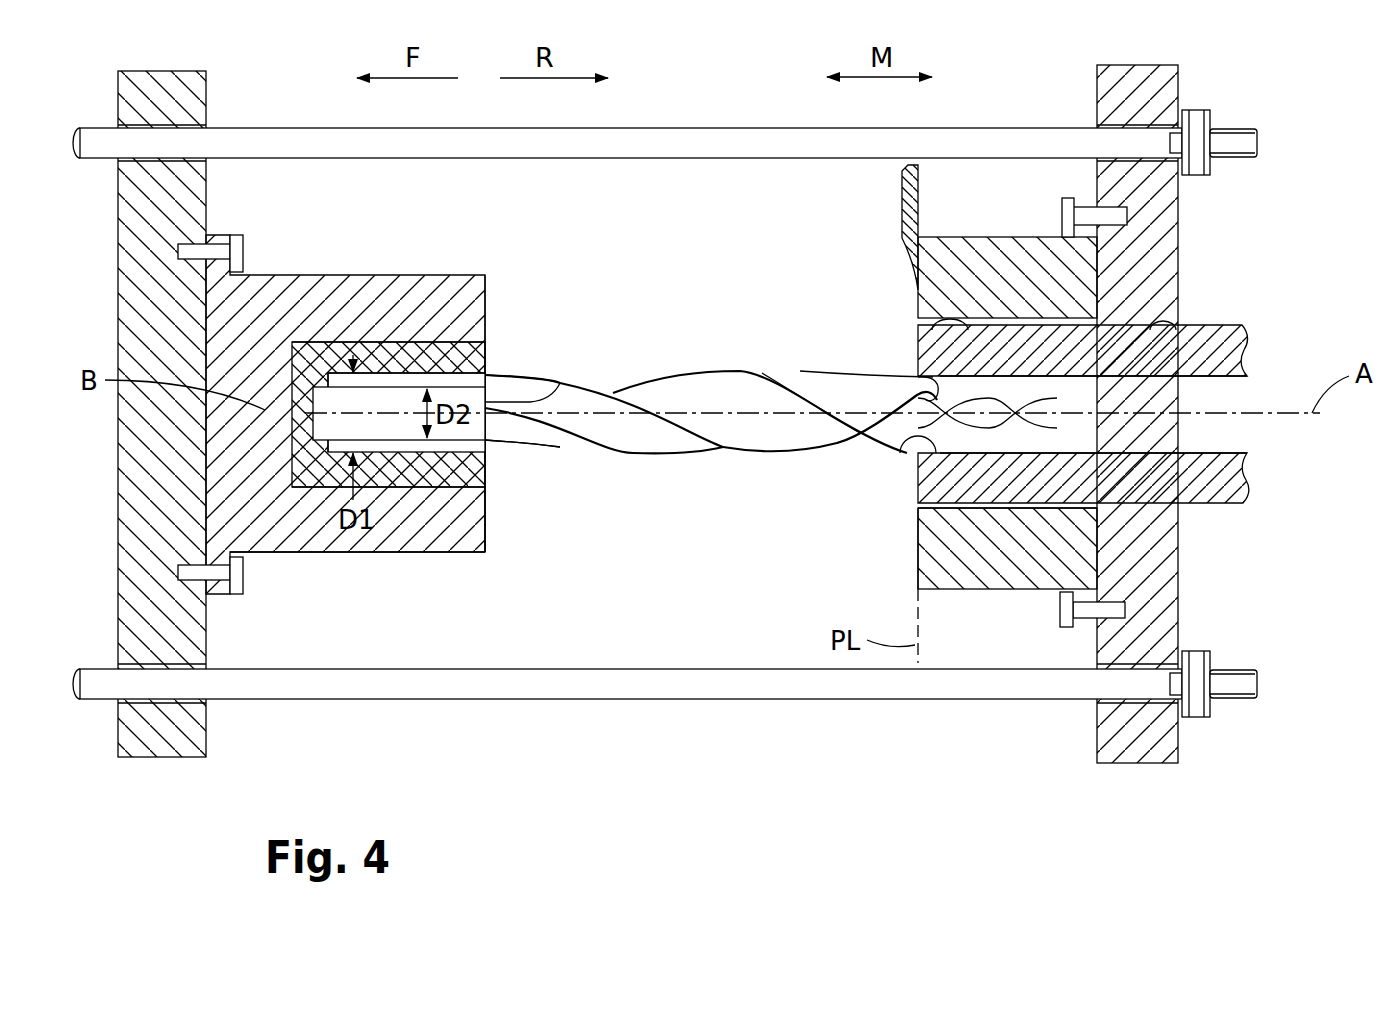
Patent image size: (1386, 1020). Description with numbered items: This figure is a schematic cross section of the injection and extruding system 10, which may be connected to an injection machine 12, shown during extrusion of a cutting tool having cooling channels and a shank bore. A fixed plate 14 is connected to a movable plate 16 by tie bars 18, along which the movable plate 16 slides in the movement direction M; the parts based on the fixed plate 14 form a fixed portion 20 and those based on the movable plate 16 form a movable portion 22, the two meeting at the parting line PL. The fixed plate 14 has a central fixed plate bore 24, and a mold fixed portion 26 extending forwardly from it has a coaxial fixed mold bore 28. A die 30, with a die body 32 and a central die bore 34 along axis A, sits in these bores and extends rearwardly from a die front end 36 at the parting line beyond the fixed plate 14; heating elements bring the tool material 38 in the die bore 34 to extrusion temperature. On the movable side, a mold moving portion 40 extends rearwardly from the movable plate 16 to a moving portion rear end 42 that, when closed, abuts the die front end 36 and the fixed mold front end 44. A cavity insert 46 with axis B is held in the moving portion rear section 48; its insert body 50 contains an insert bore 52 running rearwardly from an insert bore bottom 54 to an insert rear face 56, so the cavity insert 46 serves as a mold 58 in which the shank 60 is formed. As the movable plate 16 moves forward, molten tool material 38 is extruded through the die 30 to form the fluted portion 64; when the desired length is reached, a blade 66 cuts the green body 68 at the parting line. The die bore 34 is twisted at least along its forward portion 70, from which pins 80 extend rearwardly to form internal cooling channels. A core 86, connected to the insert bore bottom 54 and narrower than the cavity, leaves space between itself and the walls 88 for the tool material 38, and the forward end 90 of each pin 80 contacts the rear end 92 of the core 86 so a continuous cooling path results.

The system 10 is at (1261, 99).
The injection machine 12 is at (505, 240).
The fixed plate 14 is at (1154, 234).
The movable plate 16 is at (160, 295).
The tie bars 18 is at (657, 145).
The fixed portion 20 is at (972, 720).
The movable portion 22 is at (465, 735).
The fixed plate bore 24 is at (1082, 409).
The mold fixed portion 26 is at (977, 560).
The fixed mold bore 28 is at (912, 330).
The die 30 is at (1224, 487).
The die body 32 is at (1226, 356).
The die bore 34 is at (1235, 376).
The die front end 36 is at (915, 509).
The tool material 38 is at (1233, 442).
The mold moving portion 40 is at (245, 485).
The moving portion rear end 42 is at (487, 520).
The fixed mold front end 44 is at (917, 545).
The cavity insert 46 is at (310, 472).
The moving portion rear section 48 is at (467, 542).
The insert body 50 is at (313, 365).
The insert bore 52 is at (372, 447).
The insert bore bottom 54 is at (337, 455).
The insert rear face 56 is at (490, 483).
The mold 58 is at (448, 378).
The shank 60 is at (520, 453).
The fluted portion 64 is at (705, 405).
The blade 66 is at (903, 202).
The green body 68 is at (832, 403).
The forward portion 70 is at (900, 455).
The pins 80 is at (918, 358).
The core 86 is at (382, 400).
The walls 88 is at (388, 447).
The forward end 90 is at (920, 397).
The rear end 92 is at (550, 378).